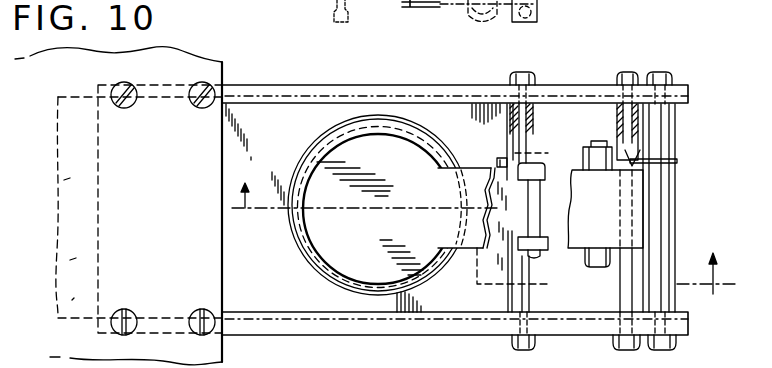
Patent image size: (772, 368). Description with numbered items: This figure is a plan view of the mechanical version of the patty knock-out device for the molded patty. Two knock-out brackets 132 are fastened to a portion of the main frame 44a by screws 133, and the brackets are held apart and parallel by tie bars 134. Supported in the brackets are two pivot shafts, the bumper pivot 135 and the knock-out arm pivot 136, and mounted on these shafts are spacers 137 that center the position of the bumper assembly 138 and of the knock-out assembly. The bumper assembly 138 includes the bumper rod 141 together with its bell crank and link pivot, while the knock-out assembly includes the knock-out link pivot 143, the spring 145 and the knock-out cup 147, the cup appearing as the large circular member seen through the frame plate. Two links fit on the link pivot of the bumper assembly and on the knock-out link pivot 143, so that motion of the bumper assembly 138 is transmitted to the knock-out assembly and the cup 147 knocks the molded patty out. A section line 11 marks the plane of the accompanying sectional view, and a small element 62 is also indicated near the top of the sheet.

The mounting plate 44a is at (185, 63).
The screw 133 is at (208, 90).
The knock-out brackets 132 is at (297, 85).
The pin 62 is at (335, 15).
The knock-out cup 147 is at (323, 272).
The section line 11- 11 is at (484, 252).
The bumper assembly 138 is at (559, 264).
The bumper pivot 135 is at (522, 296).
The bumper rod 141 is at (540, 208).
The spring 145 is at (563, 158).
The knock-out link pivot 143 is at (607, 267).
The spacers 137 is at (616, 119).
The knock-out arm pivot 136 is at (628, 230).
The tie bars 134 is at (663, 289).